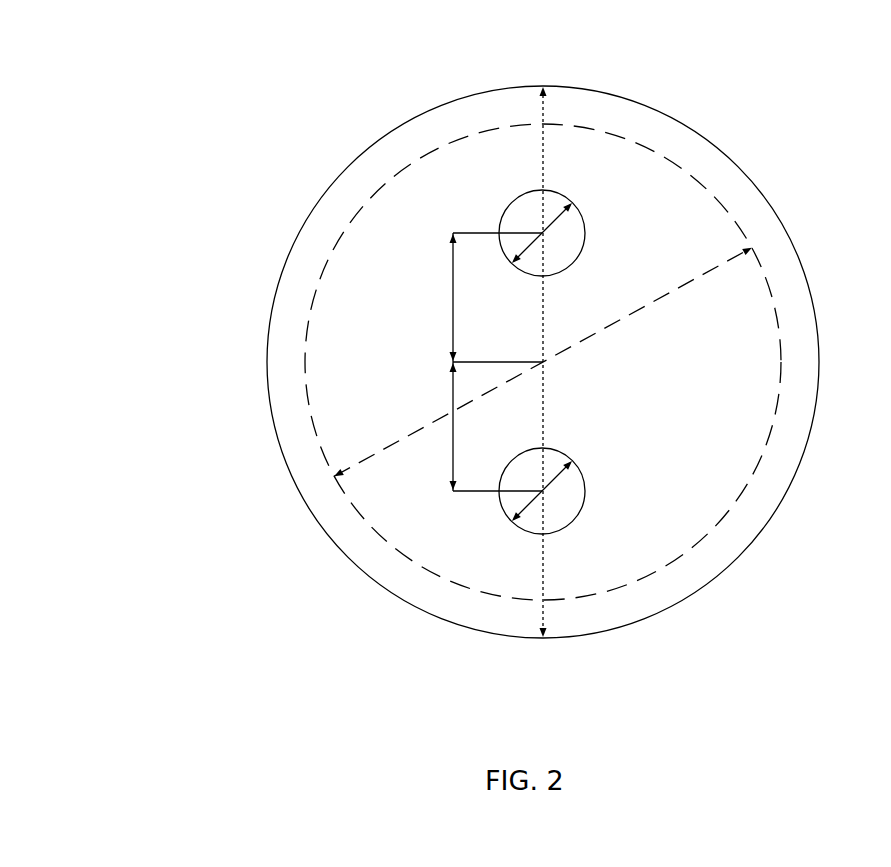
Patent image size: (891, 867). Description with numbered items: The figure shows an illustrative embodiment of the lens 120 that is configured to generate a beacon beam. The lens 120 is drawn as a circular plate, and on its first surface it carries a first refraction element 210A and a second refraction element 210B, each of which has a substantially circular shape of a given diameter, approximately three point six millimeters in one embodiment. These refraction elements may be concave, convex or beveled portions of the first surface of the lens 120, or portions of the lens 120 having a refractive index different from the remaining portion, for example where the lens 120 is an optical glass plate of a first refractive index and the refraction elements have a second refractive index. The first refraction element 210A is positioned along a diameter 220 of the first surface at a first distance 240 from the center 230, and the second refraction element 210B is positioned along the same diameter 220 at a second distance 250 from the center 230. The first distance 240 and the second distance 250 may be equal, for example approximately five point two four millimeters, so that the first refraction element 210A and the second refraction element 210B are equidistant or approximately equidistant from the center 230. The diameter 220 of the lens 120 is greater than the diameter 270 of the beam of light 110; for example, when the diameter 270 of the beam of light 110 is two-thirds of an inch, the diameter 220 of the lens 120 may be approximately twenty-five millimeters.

The beam of light 110 is at (782, 360).
The lens 120 is at (266, 364).
The first refraction element 210A is at (574, 265).
The second refraction element 210B is at (573, 524).
The diameter 220 is at (546, 171).
The center 230 is at (550, 366).
The first distance 240 is at (452, 304).
The second distance 250 is at (452, 376).
The diameter 270 is at (650, 306).